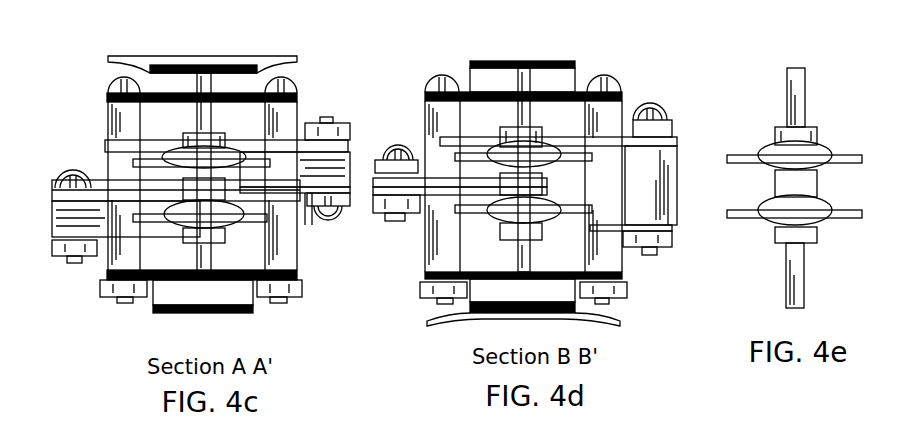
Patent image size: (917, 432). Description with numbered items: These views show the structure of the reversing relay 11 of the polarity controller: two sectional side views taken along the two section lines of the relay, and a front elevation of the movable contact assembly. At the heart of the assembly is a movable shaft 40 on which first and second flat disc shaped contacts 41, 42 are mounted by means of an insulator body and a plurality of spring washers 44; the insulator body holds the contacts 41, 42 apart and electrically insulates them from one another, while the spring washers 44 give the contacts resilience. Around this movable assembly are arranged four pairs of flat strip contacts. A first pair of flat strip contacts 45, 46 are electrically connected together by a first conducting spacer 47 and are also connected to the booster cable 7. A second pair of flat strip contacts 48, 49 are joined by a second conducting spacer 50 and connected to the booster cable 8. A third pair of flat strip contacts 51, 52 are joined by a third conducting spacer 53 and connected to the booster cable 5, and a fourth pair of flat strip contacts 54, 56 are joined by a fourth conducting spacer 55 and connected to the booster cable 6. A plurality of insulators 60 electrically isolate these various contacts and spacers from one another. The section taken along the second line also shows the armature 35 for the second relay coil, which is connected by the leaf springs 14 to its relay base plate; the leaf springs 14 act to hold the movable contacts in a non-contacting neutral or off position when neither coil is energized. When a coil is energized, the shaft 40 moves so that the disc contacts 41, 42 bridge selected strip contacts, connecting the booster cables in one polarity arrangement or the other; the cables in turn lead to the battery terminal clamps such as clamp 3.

In FIG. 4C, the battery terminal clamp 3 is at (174, 57).
In FIG. 4D, the battery terminal clamp 3 is at (499, 60).
In FIG. 4C, the booster cable 5 is at (341, 211).
In FIG. 4D, the booster cable 5 is at (376, 222).
In FIG. 4C, the booster cable 6 is at (72, 172).
In FIG. 4D, the booster cable 7 is at (656, 104).
In FIG. 4D, the booster cable 8 is at (400, 142).
In FIG. 4C, the reversing relay 11 is at (99, 56).
In FIG. 4D, the reversing relay 11 is at (457, 60).
In FIG. 4C, the leaf springs 14 is at (233, 290).
In FIG. 4D, the leaf springs 14 is at (571, 67).
In FIG. 4C, the armature 35 is at (159, 312).
In FIG. 4D, the armature 35 is at (610, 318).
In FIG. 4C, the movable shaft 40 is at (207, 85).
In FIG. 4D, the movable shaft 40 is at (523, 80).
In FIG. 4E, the movable shaft 40 is at (797, 75).
In FIG. 4C, the first flat disc shaped contact 41 is at (253, 160).
In FIG. 4D, the first flat disc shaped contact 41 is at (581, 155).
In FIG. 4E, the first flat disc shaped contact 41 is at (845, 156).
In FIG. 4C, the second flat disc shaped contact 42 is at (259, 222).
In FIG. 4D, the second flat disc shaped contact 42 is at (583, 215).
In FIG. 4E, the second flat disc shaped contact 42 is at (840, 218).
In FIG. 4C, the spring washers 44 is at (188, 153).
In FIG. 4D, the spring washers 44 is at (504, 146).
In FIG. 4E, the spring washers 44 is at (771, 151).
In FIG. 4D, the flat strip contact 45 is at (680, 141).
In FIG. 4D, the flat strip contact 46 is at (672, 232).
In FIG. 4D, the first conducting spacer 47 is at (669, 186).
In FIG. 4D, the flat strip contact 48 is at (433, 152).
In FIG. 4D, the flat strip contact 49 is at (443, 210).
In FIG. 4D, the second conducting spacer 50 is at (372, 199).
In FIG. 4C, the flat strip contact 51 is at (293, 140).
In FIG. 4C, the flat strip contact 52 is at (122, 178).
In FIG. 4C, the third conducting spacer 53 is at (342, 166).
In FIG. 4D, the third conducting spacer 53 is at (389, 154).
In FIG. 4C, the flat strip contact 54 is at (311, 226).
In FIG. 4C, the fourth conducting spacer 55 is at (61, 222).
In FIG. 4C, the flat strip contact 56 is at (58, 190).
In FIG. 4C, the insulators 60 is at (116, 110).
In FIG. 4D, the insulators 60 is at (439, 118).